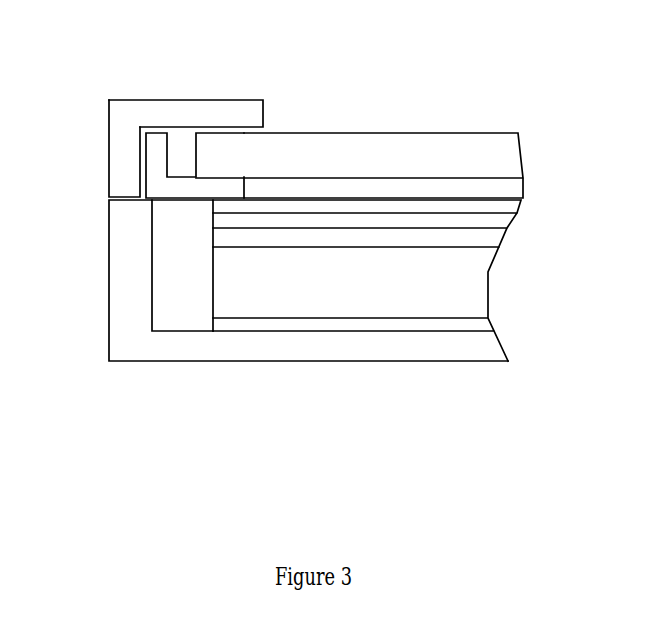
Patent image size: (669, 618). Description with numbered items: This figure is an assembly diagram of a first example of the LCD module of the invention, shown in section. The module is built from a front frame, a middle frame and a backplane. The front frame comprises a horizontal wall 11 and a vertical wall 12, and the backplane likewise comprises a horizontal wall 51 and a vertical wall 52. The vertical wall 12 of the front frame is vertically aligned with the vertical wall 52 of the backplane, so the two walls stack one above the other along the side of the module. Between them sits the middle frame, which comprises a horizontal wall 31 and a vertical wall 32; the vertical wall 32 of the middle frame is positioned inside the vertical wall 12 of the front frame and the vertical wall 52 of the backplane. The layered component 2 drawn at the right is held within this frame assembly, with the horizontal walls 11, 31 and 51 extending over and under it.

The horizontal wall 11 is at (177, 105).
The vertical wall 12 is at (115, 170).
The display panel module 2 is at (520, 142).
The horizontal wall 31 is at (243, 193).
The vertical wall 32 is at (153, 192).
The horizontal wall 51 is at (307, 370).
The vertical wall 52 is at (200, 297).